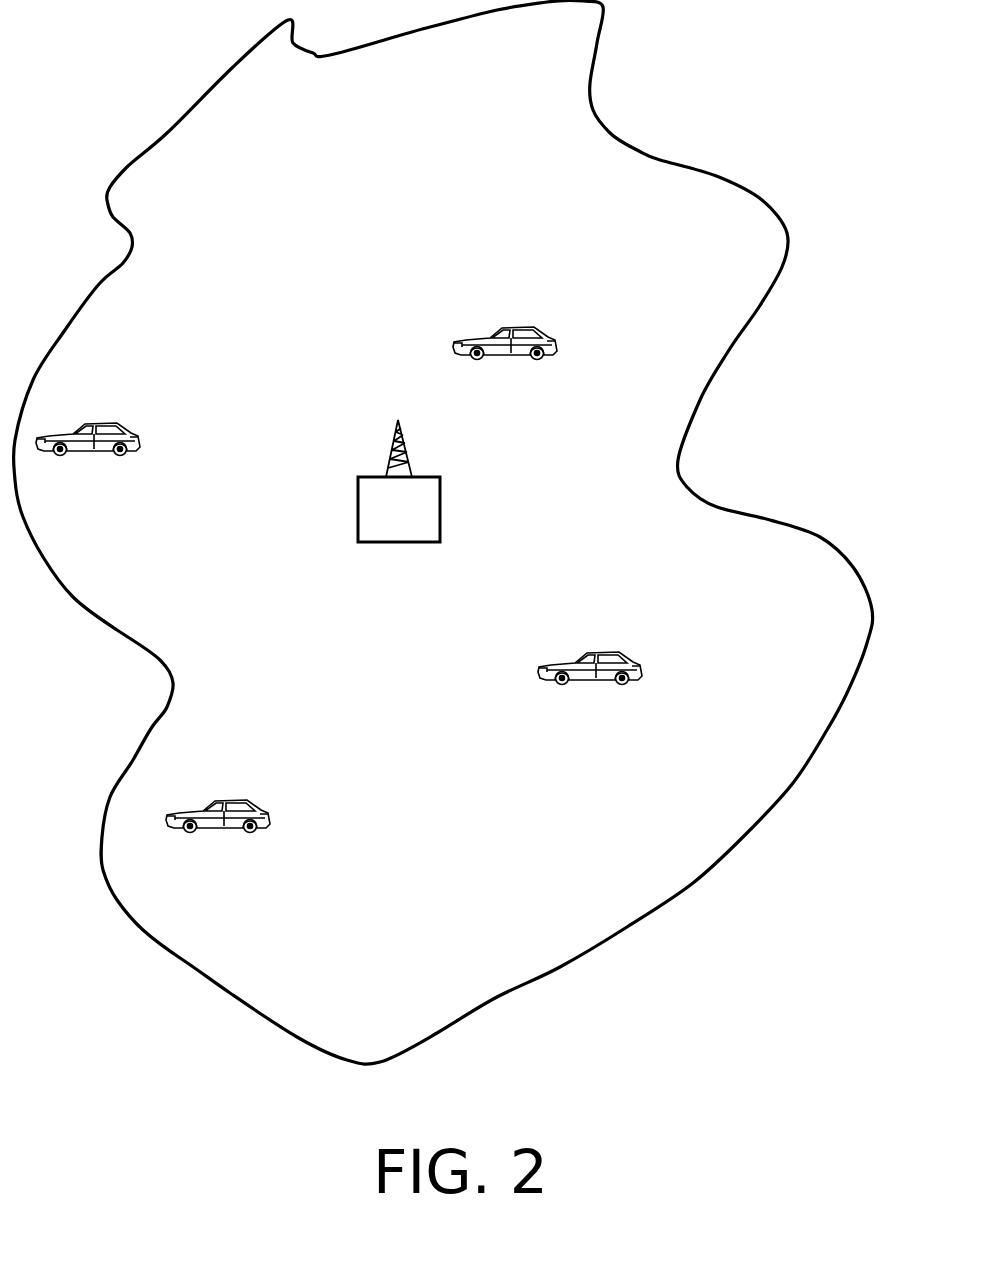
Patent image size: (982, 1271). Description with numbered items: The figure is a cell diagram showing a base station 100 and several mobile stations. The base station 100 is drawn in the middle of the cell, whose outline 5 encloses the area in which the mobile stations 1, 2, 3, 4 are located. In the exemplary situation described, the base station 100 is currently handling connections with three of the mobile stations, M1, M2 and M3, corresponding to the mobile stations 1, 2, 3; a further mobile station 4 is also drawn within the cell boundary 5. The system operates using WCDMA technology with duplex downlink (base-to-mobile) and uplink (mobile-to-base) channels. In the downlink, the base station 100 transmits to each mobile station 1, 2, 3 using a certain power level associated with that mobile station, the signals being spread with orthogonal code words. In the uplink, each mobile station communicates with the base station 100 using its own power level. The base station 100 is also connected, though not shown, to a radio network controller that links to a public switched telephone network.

The mobile station 1 is at (602, 652).
The mobile station 2 is at (229, 801).
The mobile station 3 is at (517, 327).
The mobile station 4 is at (100, 423).
The cell / service area boundary 5 is at (745, 834).
The base station 100 is at (440, 492).